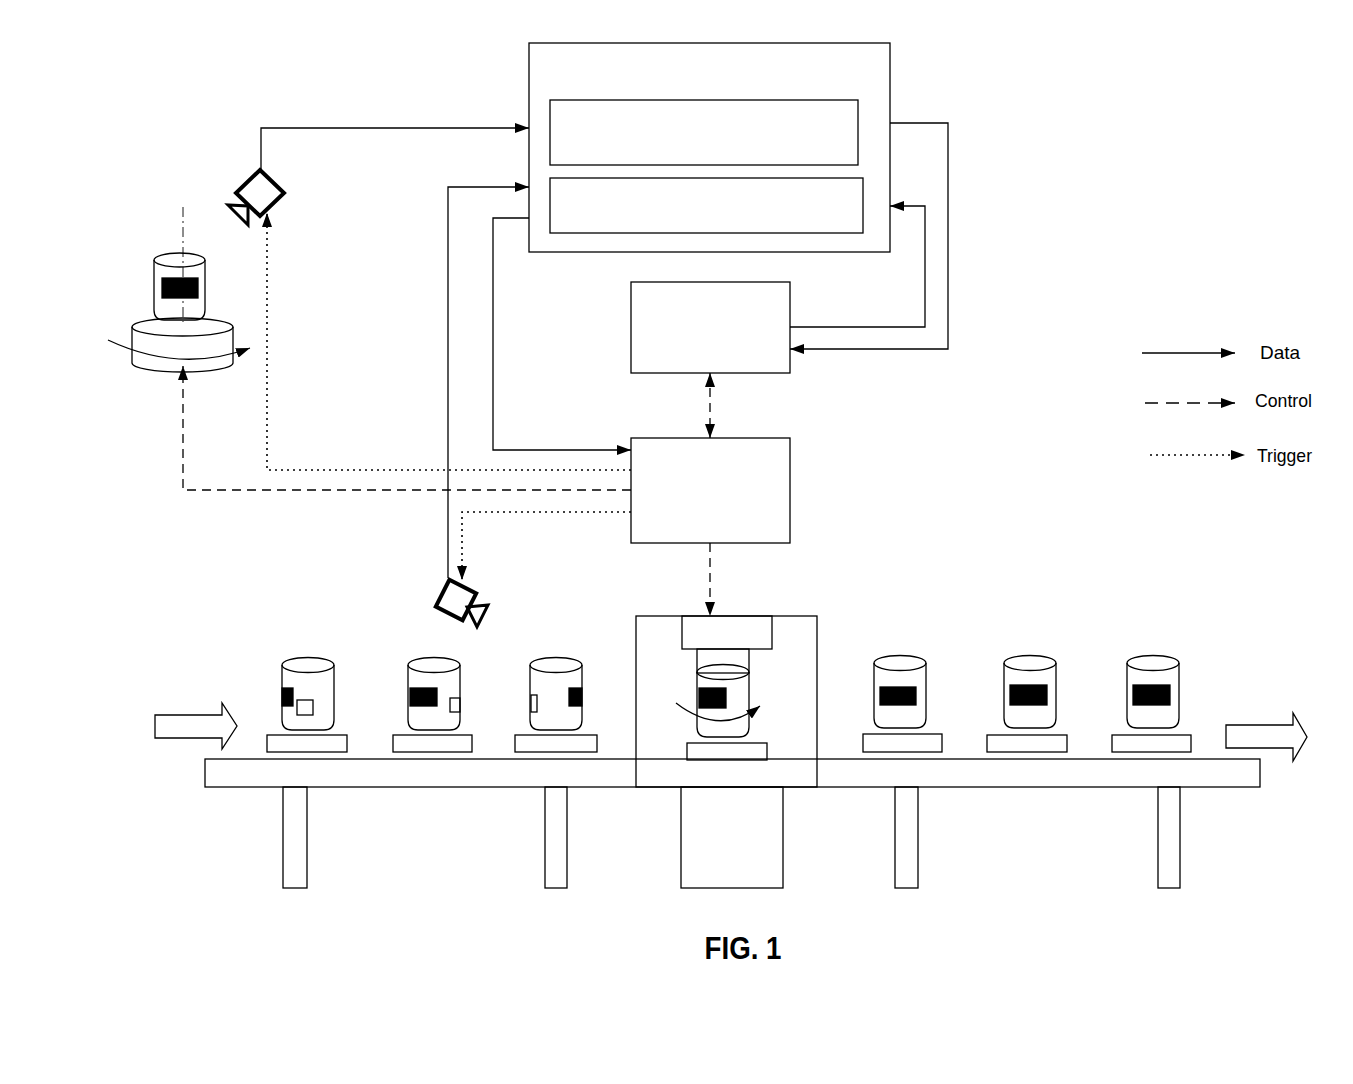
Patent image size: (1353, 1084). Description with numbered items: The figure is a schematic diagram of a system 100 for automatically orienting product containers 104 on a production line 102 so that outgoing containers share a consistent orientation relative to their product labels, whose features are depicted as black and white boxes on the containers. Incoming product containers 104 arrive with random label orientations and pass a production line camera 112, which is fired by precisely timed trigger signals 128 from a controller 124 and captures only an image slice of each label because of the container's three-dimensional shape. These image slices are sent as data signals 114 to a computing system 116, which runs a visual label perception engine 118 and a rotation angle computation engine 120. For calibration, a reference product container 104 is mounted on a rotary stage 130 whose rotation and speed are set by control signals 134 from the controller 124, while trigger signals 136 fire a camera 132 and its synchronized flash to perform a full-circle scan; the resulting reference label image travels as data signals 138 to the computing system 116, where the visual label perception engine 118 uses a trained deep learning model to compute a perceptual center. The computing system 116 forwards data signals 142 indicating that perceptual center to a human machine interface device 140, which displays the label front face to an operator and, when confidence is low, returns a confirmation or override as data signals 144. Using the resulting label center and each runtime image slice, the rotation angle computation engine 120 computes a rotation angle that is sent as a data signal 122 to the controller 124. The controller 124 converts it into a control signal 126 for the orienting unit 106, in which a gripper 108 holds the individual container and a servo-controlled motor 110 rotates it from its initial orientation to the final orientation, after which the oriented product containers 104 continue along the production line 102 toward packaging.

The system 100 is at (1187, 115).
The production line 102 is at (222, 638).
The product containers 104 is at (155, 287).
The orienting unit 106 is at (803, 606).
The gripper 108 is at (750, 665).
The servo-controlled motor 110 is at (682, 630).
The production line camera 112 is at (437, 587).
The data signals 114 is at (448, 383).
The computing system 116 is at (782, 84).
The visual label perception engine 118 is at (690, 157).
The rotation angle computation engine 120 is at (692, 231).
The data signal 122 is at (493, 312).
The controller 124 is at (696, 517).
The control signal 126 is at (713, 578).
The trigger signals 128 is at (590, 513).
The rotary stage 130 is at (158, 367).
The camera 132 is at (250, 177).
The control signals 134 is at (320, 492).
The trigger signals 136 is at (338, 467).
The data signals 138 is at (360, 130).
The human machine interface device 140 is at (695, 352).
The data signals 142 is at (948, 165).
The data signals 144 is at (925, 303).